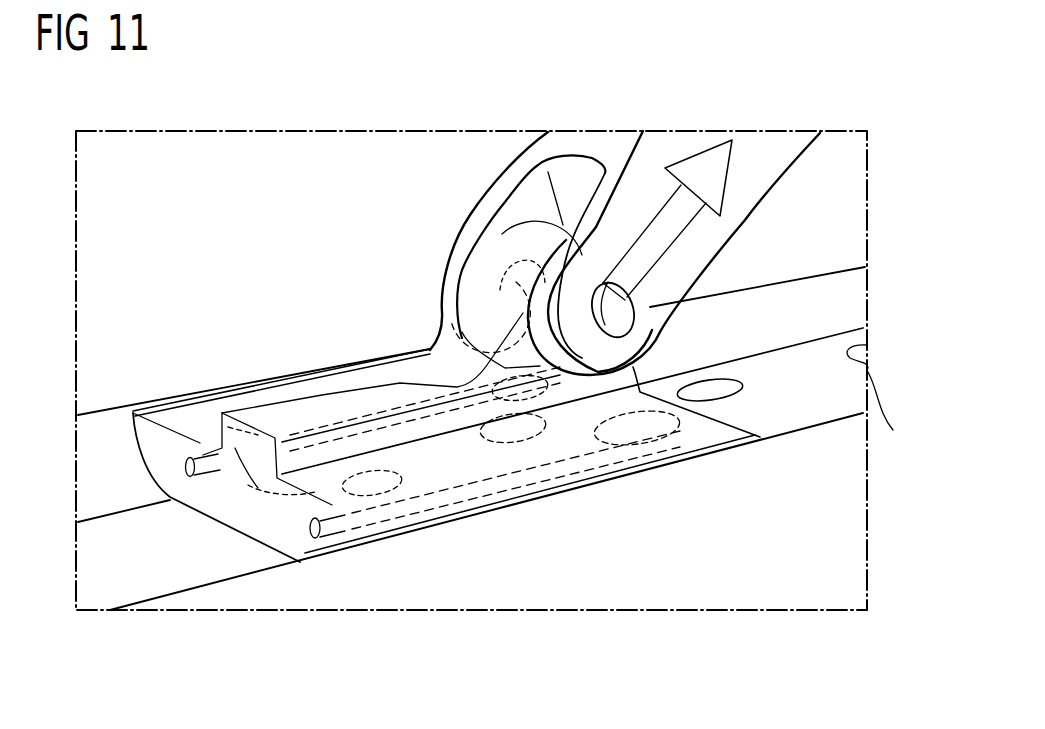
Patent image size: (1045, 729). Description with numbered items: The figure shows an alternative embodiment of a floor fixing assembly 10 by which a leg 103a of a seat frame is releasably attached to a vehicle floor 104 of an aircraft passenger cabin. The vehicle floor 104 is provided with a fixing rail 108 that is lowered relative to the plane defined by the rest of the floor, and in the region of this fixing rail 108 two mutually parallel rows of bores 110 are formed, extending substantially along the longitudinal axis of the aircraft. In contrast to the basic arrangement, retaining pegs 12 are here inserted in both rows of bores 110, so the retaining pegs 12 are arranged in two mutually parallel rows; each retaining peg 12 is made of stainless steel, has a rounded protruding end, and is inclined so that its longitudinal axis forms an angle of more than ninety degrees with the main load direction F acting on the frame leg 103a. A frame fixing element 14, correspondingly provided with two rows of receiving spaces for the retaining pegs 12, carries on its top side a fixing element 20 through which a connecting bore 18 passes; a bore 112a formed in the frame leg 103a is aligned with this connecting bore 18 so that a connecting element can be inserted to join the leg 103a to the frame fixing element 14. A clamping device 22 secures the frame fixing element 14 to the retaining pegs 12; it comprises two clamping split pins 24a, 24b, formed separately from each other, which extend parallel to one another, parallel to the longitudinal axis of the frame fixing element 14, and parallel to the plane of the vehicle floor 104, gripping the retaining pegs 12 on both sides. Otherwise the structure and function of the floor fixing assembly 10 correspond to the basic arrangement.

The floor fixing assembly 10 is at (150, 382).
The retaining peg 12 is at (395, 455).
The frame fixing element 14 is at (368, 375).
The connecting bore 18 is at (513, 295).
The fixing element 20 is at (481, 300).
The clamping device 22 is at (145, 528).
The clamping split pin 24a is at (543, 473).
The clamping split pin 24b is at (413, 420).
The leg 103a is at (590, 140).
The vehicle floor 104 is at (207, 288).
The fixing rail 108 is at (142, 590).
The bore 110 is at (743, 388).
The bore 112a is at (617, 308).
The main load direction F is at (692, 165).